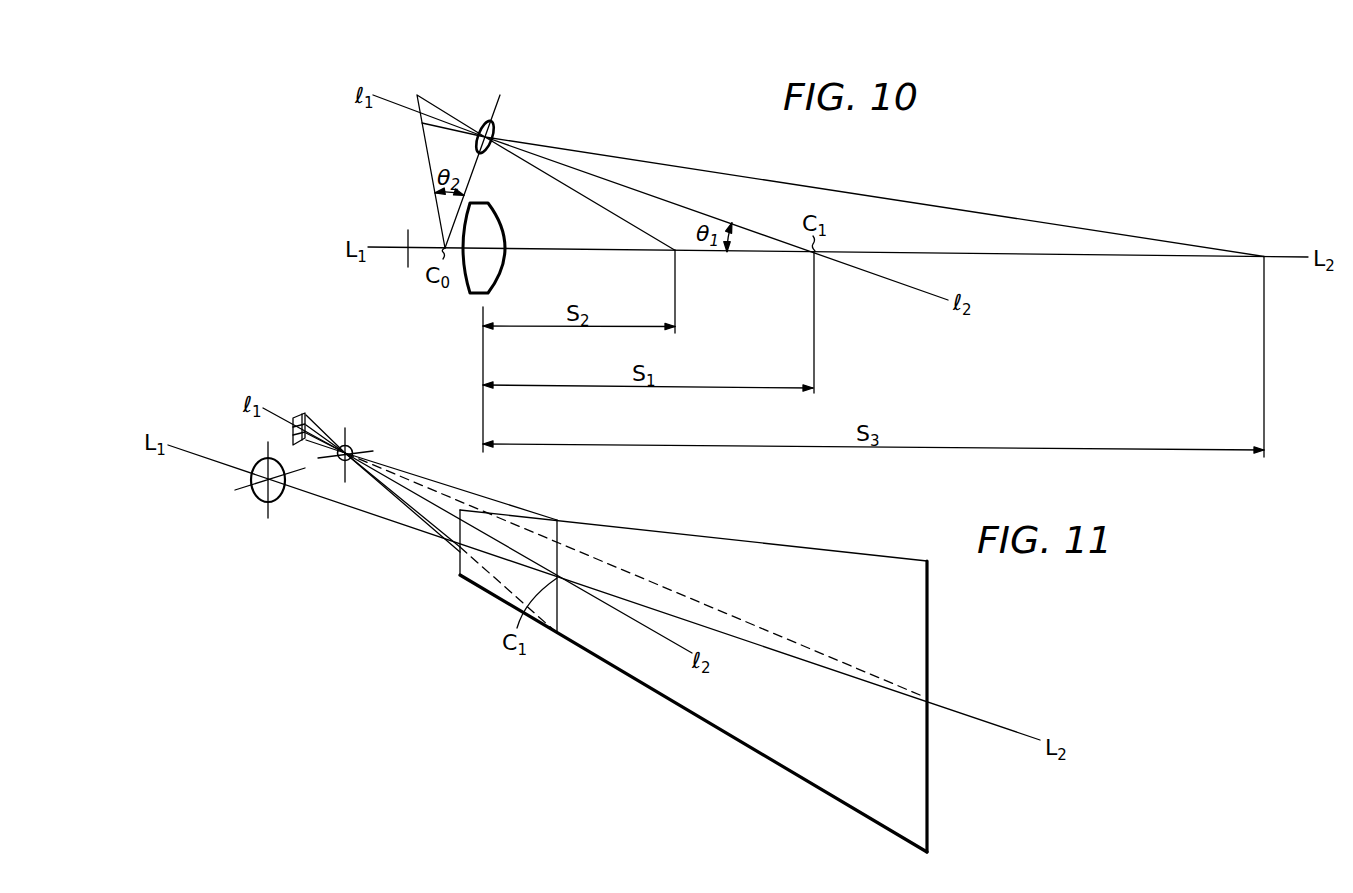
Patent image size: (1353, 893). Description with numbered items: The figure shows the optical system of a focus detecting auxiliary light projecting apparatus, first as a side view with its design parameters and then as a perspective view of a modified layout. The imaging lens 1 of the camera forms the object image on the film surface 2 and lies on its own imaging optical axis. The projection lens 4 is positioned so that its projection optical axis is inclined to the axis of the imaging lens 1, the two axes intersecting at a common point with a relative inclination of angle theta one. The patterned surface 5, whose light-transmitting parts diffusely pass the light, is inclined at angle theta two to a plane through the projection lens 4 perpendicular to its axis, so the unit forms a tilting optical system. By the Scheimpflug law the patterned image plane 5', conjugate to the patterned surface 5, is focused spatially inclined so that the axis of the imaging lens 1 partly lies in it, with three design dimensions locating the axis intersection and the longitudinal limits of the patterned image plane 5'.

In FIG. 10, the imaging lens 1 is at (472, 287).
In FIG. 11, the imaging lens 1 is at (257, 502).
In FIG. 10, the film surface 2 is at (407, 263).
In FIG. 10, the projection lens 4 is at (497, 122).
In FIG. 11, the projection lens 4 is at (352, 447).
In FIG. 10, the patterned surface 5 is at (436, 158).
In FIG. 11, the patterned surface 5 is at (319, 413).
In FIG. 11, the patterned image plane 5' is at (693, 681).